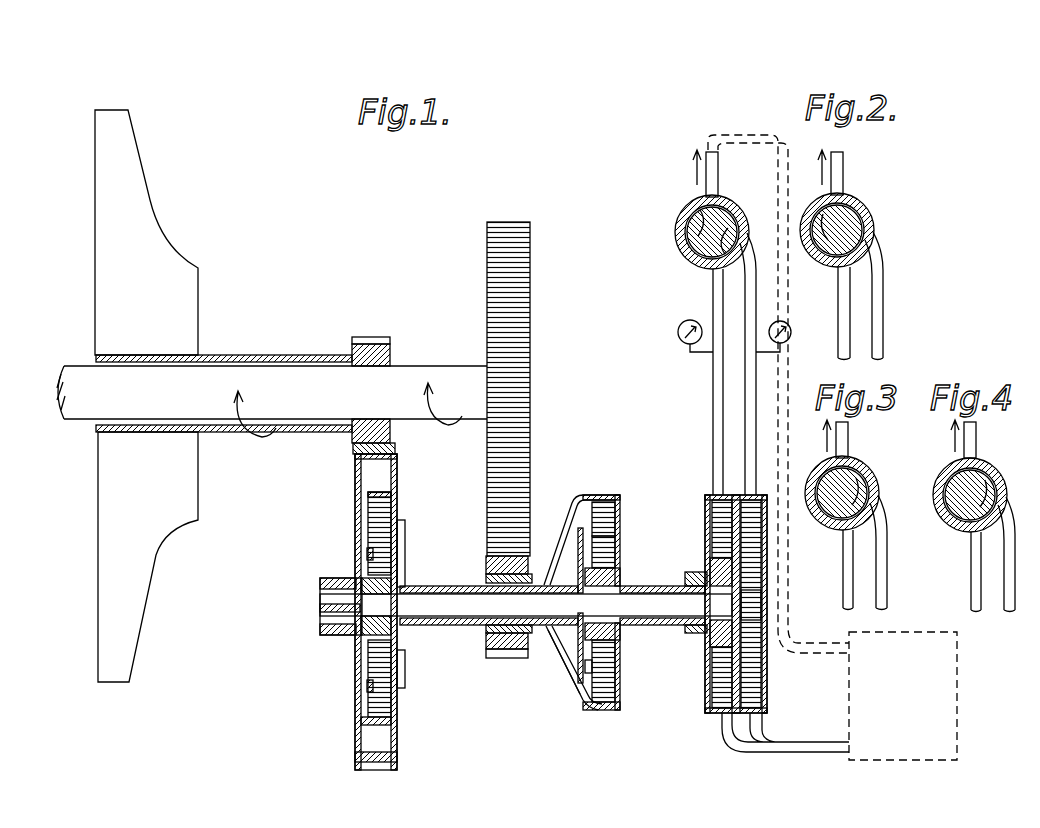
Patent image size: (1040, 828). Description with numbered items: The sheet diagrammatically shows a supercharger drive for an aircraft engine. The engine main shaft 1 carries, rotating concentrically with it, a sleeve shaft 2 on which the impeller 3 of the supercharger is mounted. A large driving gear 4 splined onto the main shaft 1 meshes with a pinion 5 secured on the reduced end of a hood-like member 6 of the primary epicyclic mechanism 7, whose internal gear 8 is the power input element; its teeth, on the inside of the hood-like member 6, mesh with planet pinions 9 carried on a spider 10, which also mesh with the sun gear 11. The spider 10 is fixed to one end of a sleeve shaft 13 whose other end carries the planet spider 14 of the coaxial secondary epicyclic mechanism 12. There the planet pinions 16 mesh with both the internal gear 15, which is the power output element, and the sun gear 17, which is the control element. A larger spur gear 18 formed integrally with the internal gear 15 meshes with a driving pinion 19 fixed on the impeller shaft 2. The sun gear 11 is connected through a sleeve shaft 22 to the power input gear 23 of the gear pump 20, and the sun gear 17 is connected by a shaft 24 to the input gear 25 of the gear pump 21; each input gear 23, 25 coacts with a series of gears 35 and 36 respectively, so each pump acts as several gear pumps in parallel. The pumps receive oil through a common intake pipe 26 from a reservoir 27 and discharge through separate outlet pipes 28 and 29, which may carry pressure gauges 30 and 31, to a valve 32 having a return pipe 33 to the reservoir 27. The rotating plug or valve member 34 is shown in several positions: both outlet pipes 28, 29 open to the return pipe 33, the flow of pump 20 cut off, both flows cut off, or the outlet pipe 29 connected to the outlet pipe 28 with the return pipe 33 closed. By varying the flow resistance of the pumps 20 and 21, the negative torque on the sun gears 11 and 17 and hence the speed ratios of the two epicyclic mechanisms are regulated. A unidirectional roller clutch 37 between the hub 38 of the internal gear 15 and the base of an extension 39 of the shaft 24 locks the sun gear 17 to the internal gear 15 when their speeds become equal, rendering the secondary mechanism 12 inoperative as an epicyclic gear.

In FIG. 1, the main shaft 1 is at (74, 372).
In FIG. 1, the sleeve shaft 2 is at (268, 355).
In FIG. 1, the impeller 3 is at (133, 222).
In FIG. 1, the driving gear 4 is at (496, 262).
In FIG. 1, the pinion 5 is at (511, 652).
In FIG. 1, the hood-like member 6 is at (562, 653).
In FIG. 1, the primary epicyclic mechanism 7 is at (612, 495).
In FIG. 1, the internal gear 8 is at (616, 516).
In FIG. 1, the planet pinions 9 is at (615, 548).
In FIG. 1, the spider 10 is at (575, 546).
In FIG. 1, the sun gear 11 is at (620, 578).
In FIG. 1, the secondary epicyclic mechanism 12 is at (354, 510).
In FIG. 1, the sleeve shaft 13 is at (458, 586).
In FIG. 1, the planet spider 14 is at (402, 534).
In FIG. 1, the internal gear 15 is at (392, 510).
In FIG. 1, the planet pinions 16 is at (373, 553).
In FIG. 1, the sun gear 17 is at (385, 642).
In FIG. 1, the spur gear 18 is at (396, 452).
In FIG. 1, the driving pinion 19 is at (372, 337).
In FIG. 1, the gear pump 20 is at (708, 498).
In FIG. 1, the gear pump 21 is at (762, 495).
In FIG. 1, the sleeve shaft 22 is at (672, 628).
In FIG. 1, the power input gear 23 is at (710, 638).
In FIG. 1, the shaft 24 is at (455, 616).
In FIG. 1, the input gear 25 is at (752, 612).
In FIG. 1, the intake pipe 26 is at (748, 752).
In FIG. 1, the reservoir 27 is at (856, 692).
In FIG. 1, the outlet pipe 28 is at (713, 418).
In FIG. 2, the outlet pipe 28 is at (840, 284).
In FIG. 3, the outlet pipe 28 is at (846, 570).
In FIG. 4, the outlet pipe 28 is at (974, 568).
In FIG. 1, the outlet pipe 29 is at (756, 418).
In FIG. 2, the outlet pipe 29 is at (882, 290).
In FIG. 3, the outlet pipe 29 is at (884, 578).
In FIG. 4, the outlet pipe 29 is at (1005, 602).
In FIG. 1, the pressure gauge 30 is at (678, 332).
In FIG. 1, the pressure gauge 31 is at (792, 334).
In FIG. 1, the valve 32 is at (680, 224).
In FIG. 2, the valve 32 is at (875, 230).
In FIG. 3, the valve 32 is at (870, 488).
In FIG. 4, the valve 32 is at (946, 510).
In FIG. 1, the return pipe 33 is at (750, 136).
In FIG. 2, the return pipe 33 is at (846, 164).
In FIG. 3, the return pipe 33 is at (849, 444).
In FIG. 4, the return pipe 33 is at (978, 442).
In FIG. 1, the valve member 34 is at (718, 240).
In FIG. 2, the valve member 34 is at (850, 232).
In FIG. 3, the valve member 34 is at (852, 486).
In FIG. 4, the valve member 34 is at (976, 486).
In FIG. 1, the gears 35 is at (724, 528).
In FIG. 1, the gears 36 is at (750, 538).
In FIG. 1, the unidirectional roller clutch 37 is at (340, 636).
In FIG. 1, the hub 38 is at (328, 578).
In FIG. 1, the extension 39 is at (320, 609).